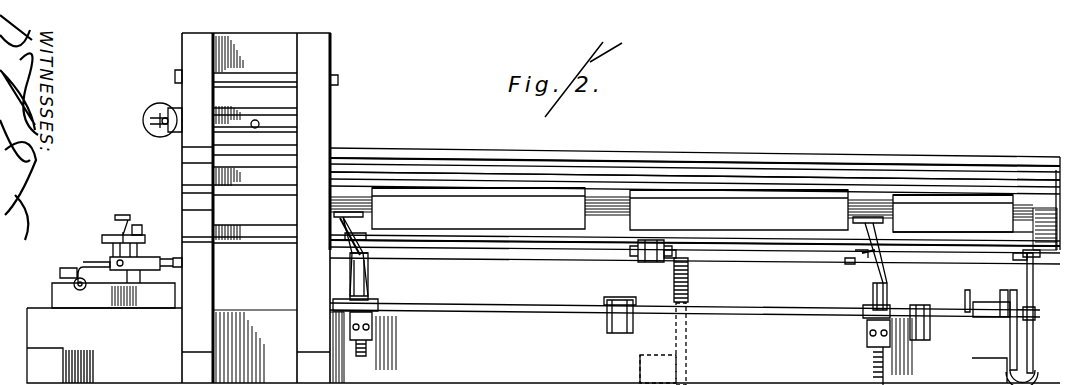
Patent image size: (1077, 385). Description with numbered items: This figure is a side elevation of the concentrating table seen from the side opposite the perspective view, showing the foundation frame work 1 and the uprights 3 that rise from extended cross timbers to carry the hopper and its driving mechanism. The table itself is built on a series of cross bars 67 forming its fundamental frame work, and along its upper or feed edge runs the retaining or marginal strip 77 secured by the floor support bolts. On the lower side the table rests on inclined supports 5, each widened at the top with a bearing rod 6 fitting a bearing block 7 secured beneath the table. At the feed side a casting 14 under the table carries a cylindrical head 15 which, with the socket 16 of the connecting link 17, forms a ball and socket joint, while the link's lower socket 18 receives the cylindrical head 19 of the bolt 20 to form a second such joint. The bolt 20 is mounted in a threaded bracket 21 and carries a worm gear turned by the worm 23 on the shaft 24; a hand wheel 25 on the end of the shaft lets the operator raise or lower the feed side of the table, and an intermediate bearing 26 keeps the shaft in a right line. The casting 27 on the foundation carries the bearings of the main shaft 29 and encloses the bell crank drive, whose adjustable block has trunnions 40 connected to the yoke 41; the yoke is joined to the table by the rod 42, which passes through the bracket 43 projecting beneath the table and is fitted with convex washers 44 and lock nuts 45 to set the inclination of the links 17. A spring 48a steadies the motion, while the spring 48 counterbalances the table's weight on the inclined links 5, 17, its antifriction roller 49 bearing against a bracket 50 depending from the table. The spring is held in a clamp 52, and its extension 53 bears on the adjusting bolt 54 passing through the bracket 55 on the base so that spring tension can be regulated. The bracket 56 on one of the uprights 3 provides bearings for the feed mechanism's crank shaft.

The foundation frame work 1 is at (543, 345).
The uprights 3 is at (350, 273).
The supports 5 is at (328, 290).
The bearing rod 6 is at (850, 256).
The bearing block 7 is at (867, 250).
The casting 14 is at (897, 215).
The cylindrical head 15 is at (852, 230).
The socket 16 is at (922, 238).
The connecting link 17 is at (370, 220).
The socket 18 is at (893, 253).
The cylindrical head 19 is at (887, 260).
The bolt 20 is at (368, 270).
The bracket 21 is at (375, 326).
The worm 23 is at (380, 300).
The shaft 24 is at (752, 314).
The hand wheel 25 is at (1035, 314).
The intermediate bearing 26 is at (607, 320).
The casting 27 is at (52, 291).
The main shaft 29 is at (82, 292).
The trunnions 40 is at (110, 259).
The yoke 41 is at (150, 262).
The rod 42 is at (475, 265).
The bracket 43 is at (670, 302).
The convex washers 44 is at (650, 265).
The lock nuts 45 is at (630, 247).
The spring 48 is at (1015, 260).
The spring 48a is at (690, 290).
The antifriction roller 49 is at (1038, 257).
The bracket 50 is at (1020, 238).
The clamp 52 is at (1026, 368).
The extension 53 is at (1008, 302).
The adjusting bolt 54 is at (968, 290).
The bracket 55 is at (945, 322).
The bracket 56 is at (180, 125).
The cross bars 67 is at (343, 205).
The retaining or marginal strip 77 is at (938, 162).